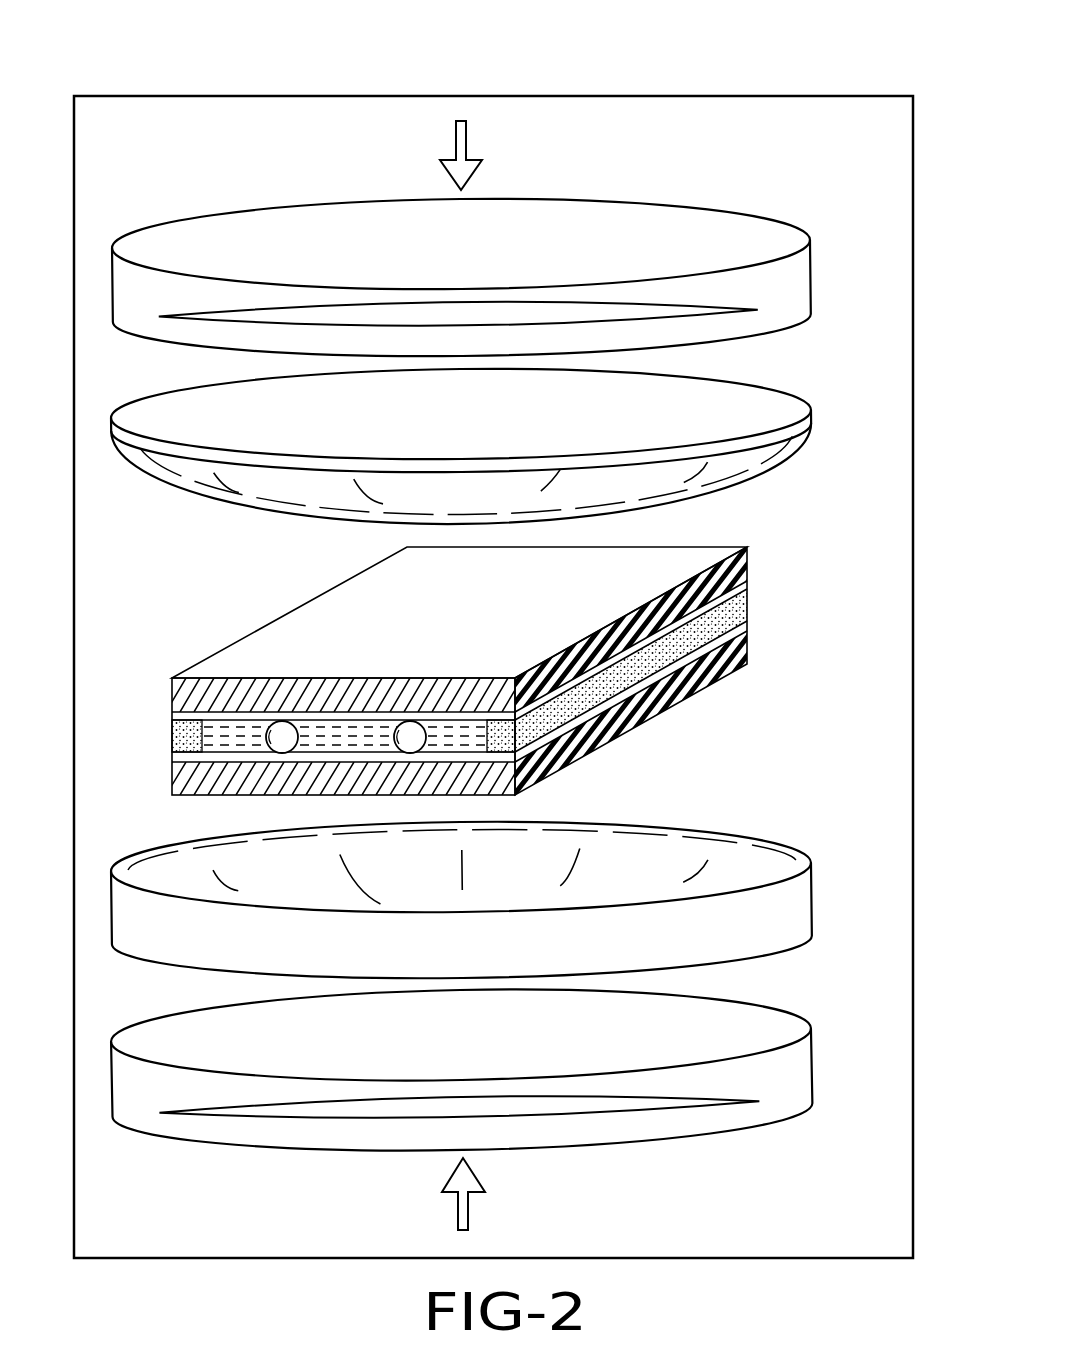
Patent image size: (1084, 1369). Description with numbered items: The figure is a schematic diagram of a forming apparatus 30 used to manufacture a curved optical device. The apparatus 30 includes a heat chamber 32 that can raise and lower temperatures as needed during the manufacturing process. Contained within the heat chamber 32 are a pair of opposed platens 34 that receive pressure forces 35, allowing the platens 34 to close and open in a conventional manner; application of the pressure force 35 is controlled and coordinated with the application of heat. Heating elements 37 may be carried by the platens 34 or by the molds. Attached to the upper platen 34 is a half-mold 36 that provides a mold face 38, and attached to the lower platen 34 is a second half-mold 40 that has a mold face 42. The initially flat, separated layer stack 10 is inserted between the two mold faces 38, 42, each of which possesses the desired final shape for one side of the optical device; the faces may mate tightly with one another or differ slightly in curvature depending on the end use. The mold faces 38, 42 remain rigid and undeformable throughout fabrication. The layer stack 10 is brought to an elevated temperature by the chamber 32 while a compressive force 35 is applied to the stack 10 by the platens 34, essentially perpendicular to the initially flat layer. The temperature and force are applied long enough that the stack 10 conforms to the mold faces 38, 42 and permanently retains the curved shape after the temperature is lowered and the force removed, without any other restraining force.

The layer stack 10 is at (724, 711).
The forming apparatus 30 is at (630, 70).
The heat chamber 32 is at (237, 96).
The platens 34 is at (497, 657).
The pressure force 35 is at (456, 148).
The half-mold 36 is at (490, 443).
The heating elements 37 is at (757, 308).
The mold face 38 is at (710, 480).
The second half-mold 40 is at (483, 870).
The mold face 42 is at (655, 858).